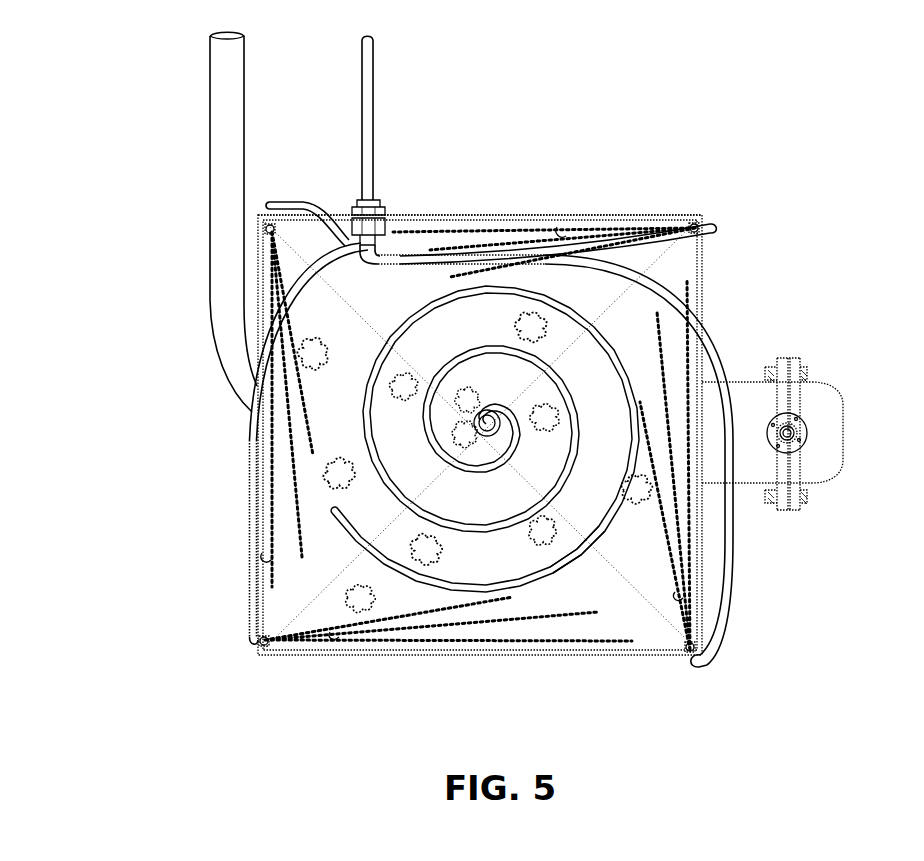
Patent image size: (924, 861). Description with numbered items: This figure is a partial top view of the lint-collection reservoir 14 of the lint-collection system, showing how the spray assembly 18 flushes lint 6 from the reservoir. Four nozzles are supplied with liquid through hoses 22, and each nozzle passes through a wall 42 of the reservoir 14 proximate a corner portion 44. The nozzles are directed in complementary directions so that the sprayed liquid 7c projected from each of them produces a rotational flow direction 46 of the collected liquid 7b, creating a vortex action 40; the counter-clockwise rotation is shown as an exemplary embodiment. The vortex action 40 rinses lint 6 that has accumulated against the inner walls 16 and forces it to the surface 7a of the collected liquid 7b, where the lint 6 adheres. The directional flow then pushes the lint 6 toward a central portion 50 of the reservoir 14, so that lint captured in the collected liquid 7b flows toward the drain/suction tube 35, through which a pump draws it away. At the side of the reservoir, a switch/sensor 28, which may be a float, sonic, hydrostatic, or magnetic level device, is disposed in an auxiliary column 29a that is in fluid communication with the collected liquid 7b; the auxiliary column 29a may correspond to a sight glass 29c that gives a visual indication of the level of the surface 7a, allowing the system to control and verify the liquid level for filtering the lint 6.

The lint 6 is at (458, 425).
The surface of the liquid 7a is at (630, 615).
The collected liquid 7b is at (580, 560).
The sprayed liquid 7c is at (471, 221).
The lint-collection reservoir 14 is at (672, 208).
The inner walls 16 is at (557, 228).
The spray assembly 18 is at (385, 210).
The hoses 22 is at (300, 203).
The switch/sensor 28 is at (796, 421).
The auxiliary column 29a is at (812, 454).
The sight glass 29c is at (810, 428).
The drain/suction tube 35 is at (214, 164).
The vortex action 40 is at (510, 352).
The wall of the reservoir 42 is at (525, 216).
The corner portion 44 is at (263, 180).
The rotational flow direction 46 is at (568, 300).
The central portion 50 is at (530, 454).